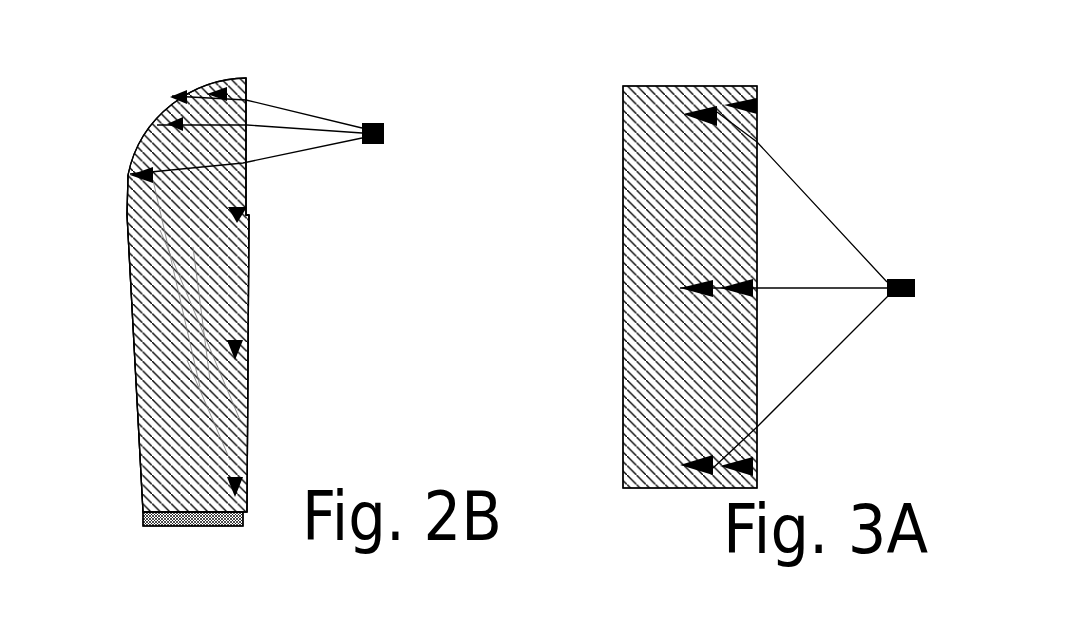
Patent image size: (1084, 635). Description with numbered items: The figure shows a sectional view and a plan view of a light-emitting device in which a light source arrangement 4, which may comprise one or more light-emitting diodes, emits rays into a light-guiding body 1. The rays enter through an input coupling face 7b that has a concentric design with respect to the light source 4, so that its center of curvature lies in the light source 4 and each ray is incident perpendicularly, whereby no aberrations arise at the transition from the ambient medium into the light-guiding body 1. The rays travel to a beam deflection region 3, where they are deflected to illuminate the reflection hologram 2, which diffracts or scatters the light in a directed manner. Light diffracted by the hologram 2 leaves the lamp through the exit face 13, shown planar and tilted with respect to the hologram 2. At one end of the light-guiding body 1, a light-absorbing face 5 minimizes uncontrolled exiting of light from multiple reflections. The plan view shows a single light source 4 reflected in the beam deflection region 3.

In FIG. 2B, the light-guiding body 1 is at (244, 193).
In FIG. 2B, the reflection hologram 2 is at (247, 382).
In FIG. 2B, the beam deflection region 3 is at (180, 98).
In FIG. 3A, the beam deflection region 3 is at (587, 272).
In FIG. 2B, the light source arrangement 4 is at (375, 122).
In FIG. 3A, the light source arrangement 4 is at (902, 279).
In FIG. 2B, the face 5 is at (177, 524).
In FIG. 2B, the input coupling face 7b is at (272, 122).
In FIG. 2B, the exit face 13 is at (128, 332).